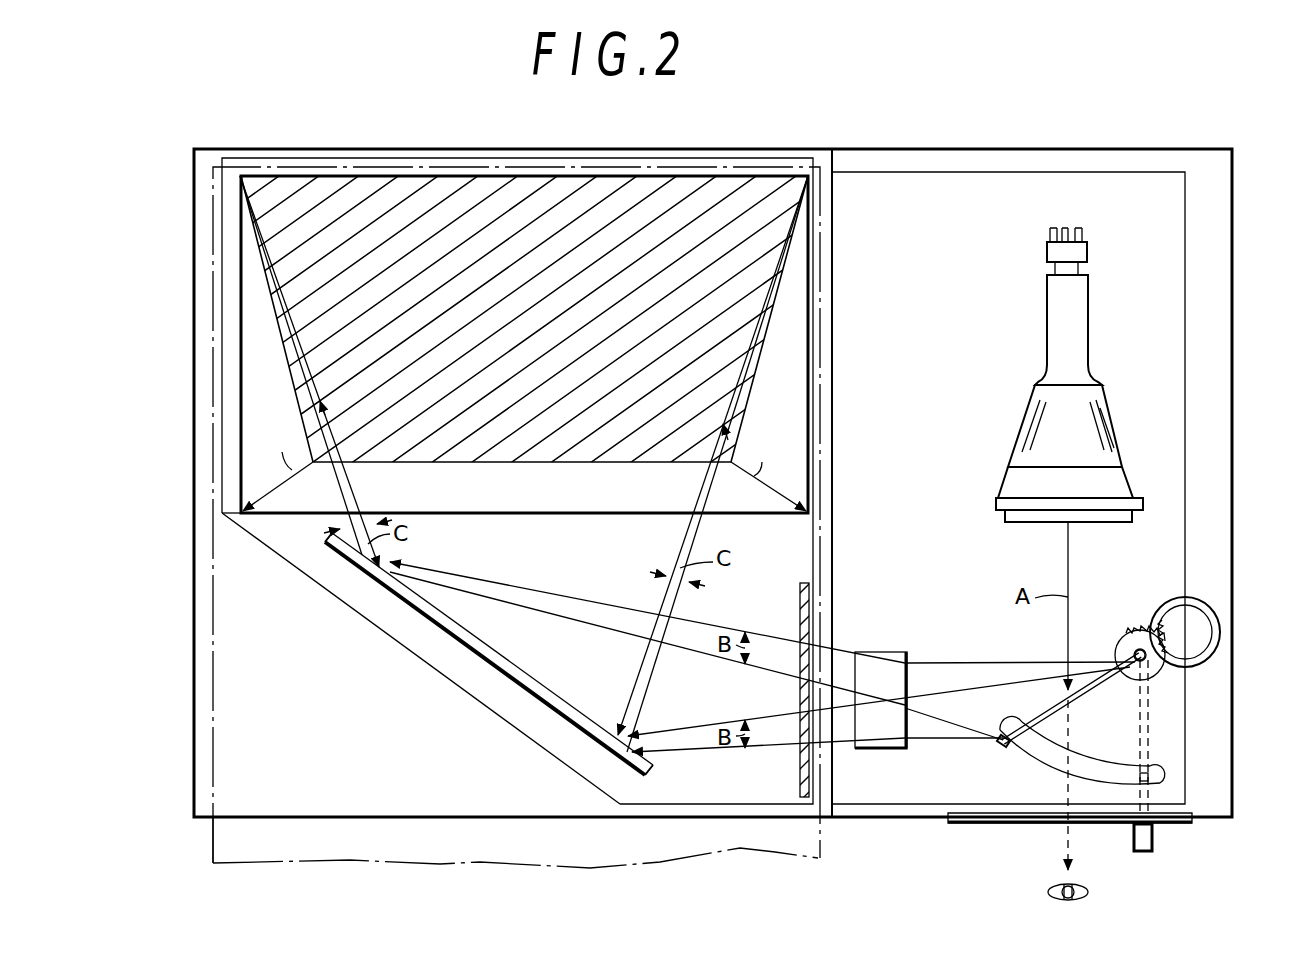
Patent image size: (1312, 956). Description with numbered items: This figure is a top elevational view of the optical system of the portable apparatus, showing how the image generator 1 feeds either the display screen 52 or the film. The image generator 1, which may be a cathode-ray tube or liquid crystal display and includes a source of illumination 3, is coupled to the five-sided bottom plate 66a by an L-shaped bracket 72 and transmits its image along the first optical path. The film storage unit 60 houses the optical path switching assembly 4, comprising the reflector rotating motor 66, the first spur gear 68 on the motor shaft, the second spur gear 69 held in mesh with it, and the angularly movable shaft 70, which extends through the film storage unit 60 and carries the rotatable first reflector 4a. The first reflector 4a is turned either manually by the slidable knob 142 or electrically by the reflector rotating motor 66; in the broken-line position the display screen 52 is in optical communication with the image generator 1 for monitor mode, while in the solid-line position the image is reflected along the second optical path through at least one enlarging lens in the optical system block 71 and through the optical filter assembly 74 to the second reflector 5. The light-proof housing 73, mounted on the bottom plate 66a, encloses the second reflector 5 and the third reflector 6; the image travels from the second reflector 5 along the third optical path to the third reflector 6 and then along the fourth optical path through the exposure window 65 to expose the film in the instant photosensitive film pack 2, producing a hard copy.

The image generator 1 is at (1109, 468).
The instant photosensitive film pack 2 is at (237, 862).
The source of illumination 3 is at (1073, 352).
The optical path switching assembly 4 is at (1160, 690).
The first reflector 4a is at (1012, 740).
The second reflector 5 is at (525, 690).
The third reflector 6 is at (340, 183).
The display screen 52 is at (1095, 828).
The film storage unit 60 is at (1222, 180).
The exposure window 65 is at (790, 348).
The reflector rotating motor 66 is at (1200, 640).
The bottom plate 66a is at (1163, 238).
The first spur gear 68 is at (1212, 596).
The second spur gear 69 is at (1135, 630).
The angularly movable shaft 70 is at (1160, 688).
The optical system block 71 is at (870, 750).
The L-shaped bracket 72 is at (1005, 505).
The light-proof housing 73 is at (355, 602).
The optical filter assembly 74 is at (808, 590).
The slidable knob 142 is at (1150, 780).